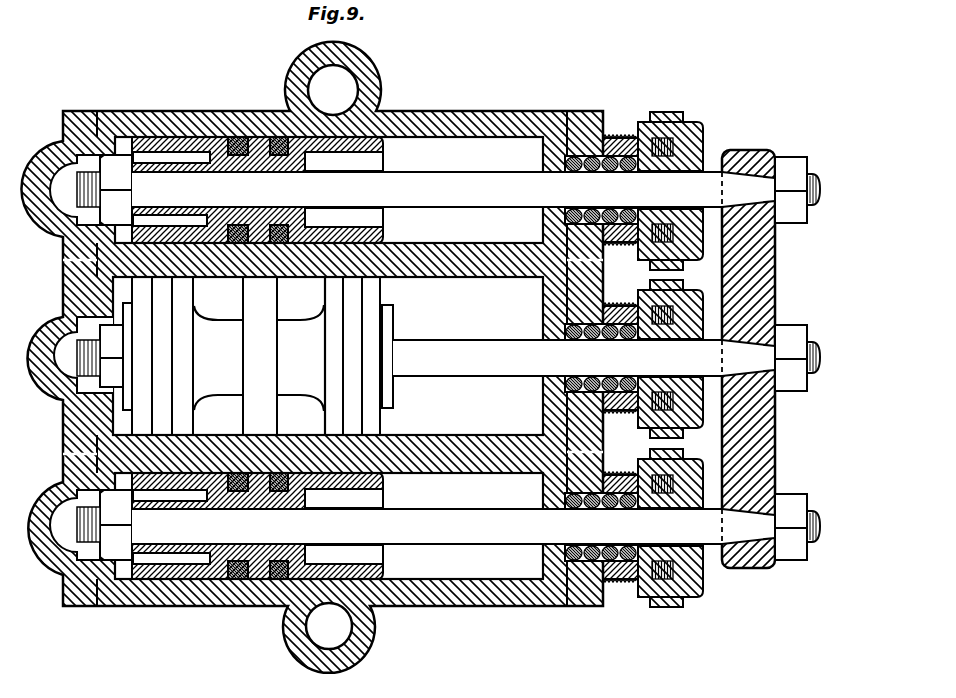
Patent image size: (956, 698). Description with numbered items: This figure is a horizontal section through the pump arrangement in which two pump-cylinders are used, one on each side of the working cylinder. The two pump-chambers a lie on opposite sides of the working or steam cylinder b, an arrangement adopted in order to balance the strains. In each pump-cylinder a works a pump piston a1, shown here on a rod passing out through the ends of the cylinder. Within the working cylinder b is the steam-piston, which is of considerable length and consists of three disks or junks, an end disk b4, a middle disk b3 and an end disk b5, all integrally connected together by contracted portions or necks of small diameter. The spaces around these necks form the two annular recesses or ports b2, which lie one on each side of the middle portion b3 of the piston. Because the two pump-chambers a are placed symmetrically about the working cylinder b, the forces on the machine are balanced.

The pump-cylinder a is at (329, 358).
The pump piston a1 is at (182, 575).
The working cylinder b is at (328, 356).
The annular ports b2 is at (259, 356).
The middle disk b3 is at (260, 356).
The end disk b4 is at (158, 356).
The end disk b5 is at (376, 356).